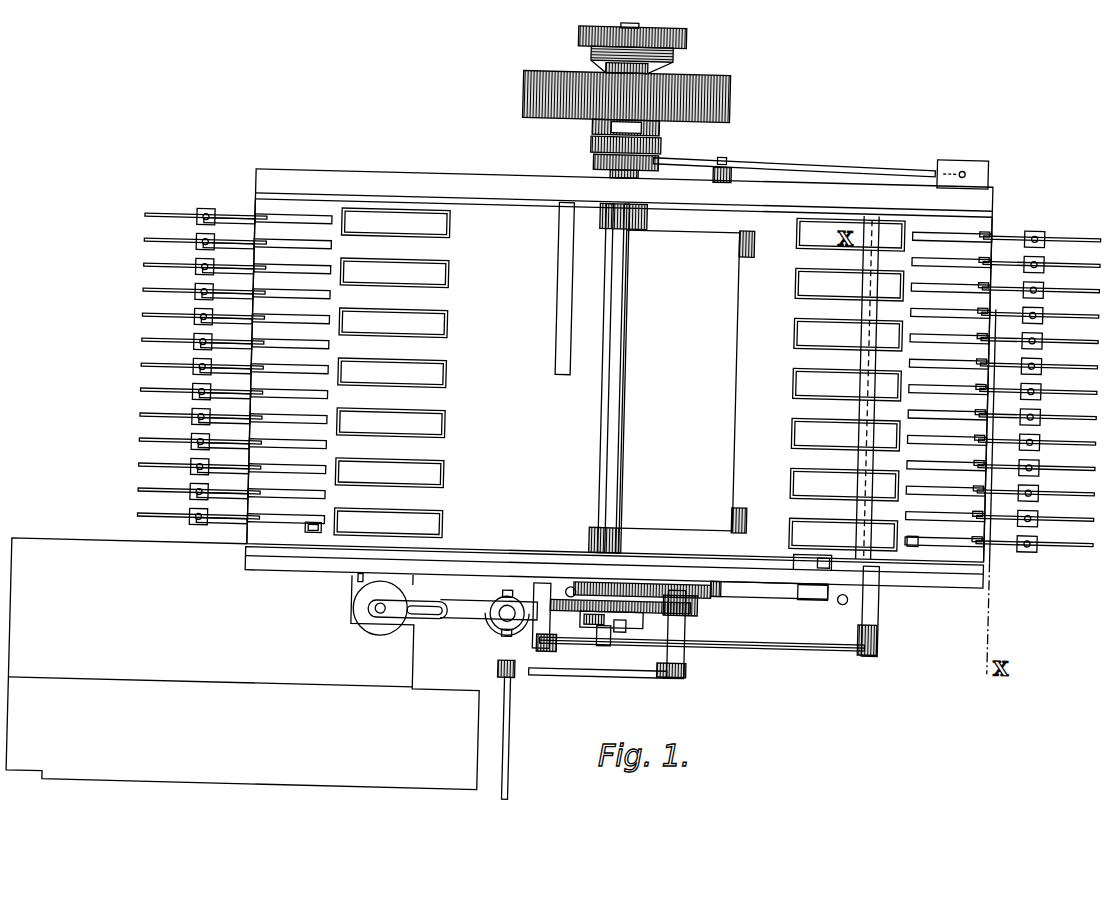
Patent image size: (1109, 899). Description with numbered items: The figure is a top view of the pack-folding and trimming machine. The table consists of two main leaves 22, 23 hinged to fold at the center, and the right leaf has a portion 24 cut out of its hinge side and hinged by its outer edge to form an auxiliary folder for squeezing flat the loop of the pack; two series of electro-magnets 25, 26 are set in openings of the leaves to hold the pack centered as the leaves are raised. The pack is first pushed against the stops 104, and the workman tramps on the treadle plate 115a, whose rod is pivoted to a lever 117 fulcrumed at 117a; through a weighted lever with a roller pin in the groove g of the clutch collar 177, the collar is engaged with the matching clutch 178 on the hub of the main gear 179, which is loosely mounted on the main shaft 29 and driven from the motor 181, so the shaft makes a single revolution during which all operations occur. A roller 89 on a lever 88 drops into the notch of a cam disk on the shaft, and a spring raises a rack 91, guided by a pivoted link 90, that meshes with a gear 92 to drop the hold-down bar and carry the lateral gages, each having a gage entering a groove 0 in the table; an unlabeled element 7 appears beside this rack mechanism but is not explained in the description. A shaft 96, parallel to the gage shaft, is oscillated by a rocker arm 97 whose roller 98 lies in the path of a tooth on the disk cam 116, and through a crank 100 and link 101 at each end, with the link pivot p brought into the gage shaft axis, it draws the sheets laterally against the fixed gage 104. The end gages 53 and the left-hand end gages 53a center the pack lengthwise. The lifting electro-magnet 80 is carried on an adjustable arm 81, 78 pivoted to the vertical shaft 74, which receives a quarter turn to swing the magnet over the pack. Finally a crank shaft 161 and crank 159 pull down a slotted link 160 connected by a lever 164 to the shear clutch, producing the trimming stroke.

The motor 181 is at (572, 35).
The main gear 179 is at (516, 97).
The matching clutch 178 is at (588, 131).
The groove g is at (580, 160).
The clutch collar 177 is at (588, 173).
The main shaft 29 is at (622, 179).
The lever 117 is at (850, 160).
The fulcrum 117a is at (722, 163).
The treadle plate 115a is at (947, 144).
The groove 0 is at (556, 294).
The left table leaf 22 is at (387, 375).
The right table leaf 23 is at (868, 386).
The auxiliary folder portion 24 is at (672, 424).
The electro-magnets 25 is at (392, 373).
The electro-magnets 26 is at (847, 384).
The link pivot p is at (862, 254).
The left-hand end gages 53a is at (253, 279).
The end gages 53 is at (983, 298).
The stops 104 is at (309, 536).
The electro-magnet 80 is at (405, 628).
The adjustable arm 81 is at (410, 604).
The adjustable arm 78 is at (458, 600).
The vertical shaft 74 is at (500, 628).
The link 101 is at (545, 602).
The crank 100 is at (552, 642).
The lever 88 is at (683, 583).
The roller 89 is at (612, 584).
The gear 7 is at (648, 582).
The disk cam 116 is at (590, 608).
The rocker arm 97 is at (612, 648).
The roller 98 is at (626, 645).
The crank shaft 161 is at (692, 657).
The crank 159 is at (597, 680).
The shaft 96 is at (788, 648).
The pivoted link 90 is at (790, 590).
The rack 91 is at (815, 596).
The gear 92 is at (834, 558).
The slotted link 160 is at (506, 676).
The lever 164 is at (518, 722).